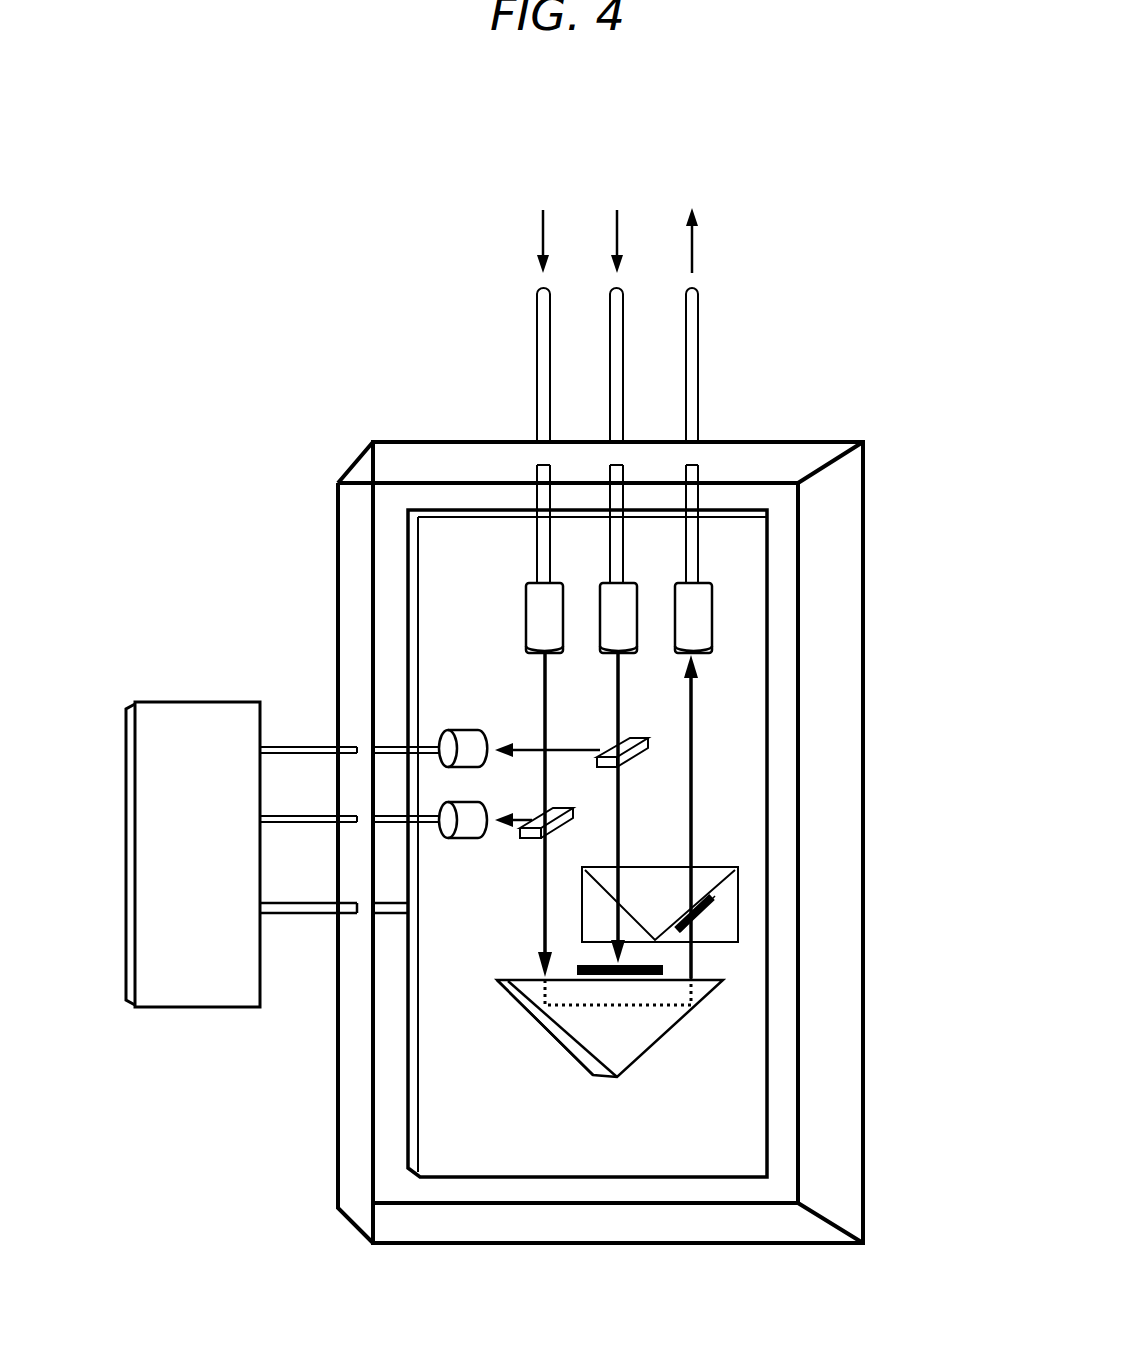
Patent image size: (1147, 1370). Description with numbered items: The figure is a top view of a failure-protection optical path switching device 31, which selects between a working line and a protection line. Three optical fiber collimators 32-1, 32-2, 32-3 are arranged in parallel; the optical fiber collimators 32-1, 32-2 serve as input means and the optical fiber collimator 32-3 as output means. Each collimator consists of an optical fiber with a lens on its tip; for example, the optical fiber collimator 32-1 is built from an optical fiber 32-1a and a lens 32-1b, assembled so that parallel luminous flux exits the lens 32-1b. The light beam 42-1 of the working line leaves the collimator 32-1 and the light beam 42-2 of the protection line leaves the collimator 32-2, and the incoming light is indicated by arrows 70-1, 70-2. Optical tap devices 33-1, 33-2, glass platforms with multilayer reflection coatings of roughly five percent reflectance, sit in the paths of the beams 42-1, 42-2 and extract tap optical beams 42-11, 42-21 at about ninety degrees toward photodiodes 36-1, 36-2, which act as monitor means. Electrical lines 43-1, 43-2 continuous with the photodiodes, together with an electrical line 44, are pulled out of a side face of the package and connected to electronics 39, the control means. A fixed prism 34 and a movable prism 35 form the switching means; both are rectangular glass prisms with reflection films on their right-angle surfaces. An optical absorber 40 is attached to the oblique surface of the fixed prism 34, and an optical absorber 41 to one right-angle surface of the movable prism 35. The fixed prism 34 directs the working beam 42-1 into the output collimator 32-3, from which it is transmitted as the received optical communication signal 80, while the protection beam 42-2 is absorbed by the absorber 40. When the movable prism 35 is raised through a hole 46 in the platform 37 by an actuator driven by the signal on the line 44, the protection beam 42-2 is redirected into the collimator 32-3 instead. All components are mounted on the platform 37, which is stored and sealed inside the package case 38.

The failure-protection optical path switching device 31 is at (312, 414).
The optical fiber collimator 32-1 is at (538, 563).
The optical fiber 32-1a is at (540, 376).
The lens 32-1b is at (528, 612).
The optical fiber collimator 32-2 is at (623, 528).
The optical fiber collimator 32-3 is at (699, 567).
The optical tap device 33-1 is at (528, 834).
The optical tap device 33-2 is at (691, 755).
The fixed prism 34 is at (637, 1042).
The movable prism 35 is at (738, 868).
The photodiode 36-1 is at (462, 839).
The photodiode 36-2 is at (462, 730).
The platform 37 is at (432, 1100).
The package case 38 is at (633, 1245).
The electronics 39 is at (193, 1000).
The optical absorber 40 is at (585, 975).
The optical absorber 41 is at (710, 896).
The light beam 42-1 is at (545, 683).
The light beam 42-2 is at (648, 740).
The tap optical beam 42-11 is at (505, 823).
The tap optical beam 42-21 is at (520, 748).
The electrical line 43-1 is at (298, 824).
The electrical line 43-2 is at (298, 746).
The electrical line 44 is at (298, 915).
The hole 46 is at (727, 910).
The first input light 70-1 is at (543, 222).
The second input light 70-2 is at (617, 225).
The received optical communication signal 80 is at (693, 252).